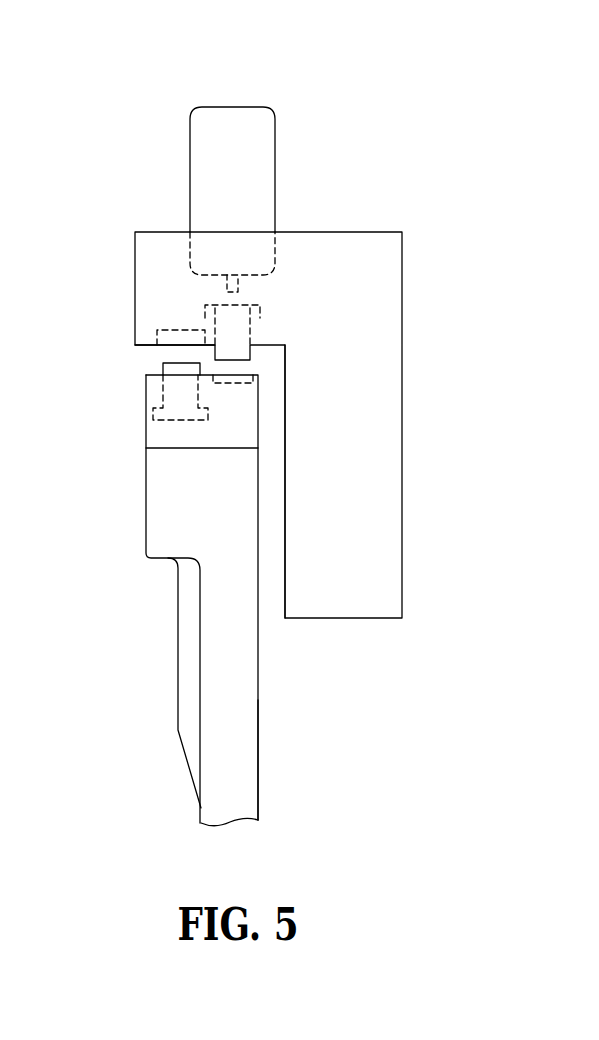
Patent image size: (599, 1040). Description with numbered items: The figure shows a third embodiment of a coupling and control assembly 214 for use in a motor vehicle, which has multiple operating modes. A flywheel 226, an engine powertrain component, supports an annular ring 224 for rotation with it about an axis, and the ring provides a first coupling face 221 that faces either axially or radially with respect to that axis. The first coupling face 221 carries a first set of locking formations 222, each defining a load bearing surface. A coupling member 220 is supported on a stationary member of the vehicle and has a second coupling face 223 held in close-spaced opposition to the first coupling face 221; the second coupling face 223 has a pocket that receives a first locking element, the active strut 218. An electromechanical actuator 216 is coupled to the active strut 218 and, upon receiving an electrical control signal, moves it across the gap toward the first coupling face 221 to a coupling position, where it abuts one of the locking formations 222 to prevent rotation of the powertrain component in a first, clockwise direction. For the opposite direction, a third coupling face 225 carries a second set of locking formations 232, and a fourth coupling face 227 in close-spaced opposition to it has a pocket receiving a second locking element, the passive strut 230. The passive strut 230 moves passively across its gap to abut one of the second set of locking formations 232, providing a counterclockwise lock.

The coupling and control assembly 214 is at (313, 97).
The electromechanical actuator 216 is at (275, 197).
The first strut 218 is at (252, 330).
The coupling member 220 is at (340, 618).
The first coupling face 221 is at (262, 672).
The first set of locking formations 222 is at (240, 385).
The second coupling face 223 is at (290, 565).
The annular ring 224 is at (207, 449).
The third coupling face 225 is at (165, 370).
The flywheel 226 is at (258, 785).
The fourth coupling face 227 is at (148, 350).
The second strut 230 is at (177, 425).
The second set of locking formations 232 is at (182, 330).